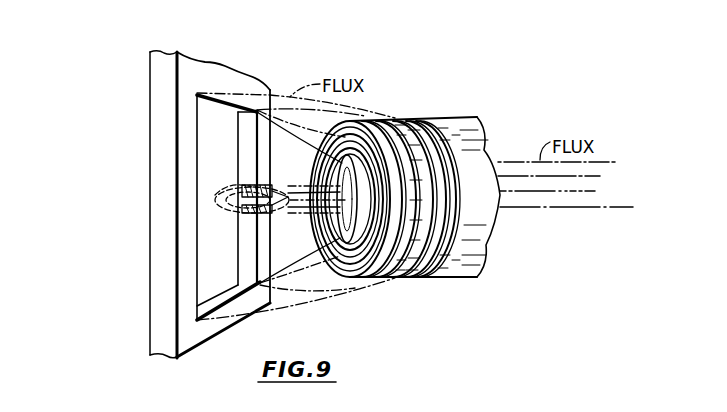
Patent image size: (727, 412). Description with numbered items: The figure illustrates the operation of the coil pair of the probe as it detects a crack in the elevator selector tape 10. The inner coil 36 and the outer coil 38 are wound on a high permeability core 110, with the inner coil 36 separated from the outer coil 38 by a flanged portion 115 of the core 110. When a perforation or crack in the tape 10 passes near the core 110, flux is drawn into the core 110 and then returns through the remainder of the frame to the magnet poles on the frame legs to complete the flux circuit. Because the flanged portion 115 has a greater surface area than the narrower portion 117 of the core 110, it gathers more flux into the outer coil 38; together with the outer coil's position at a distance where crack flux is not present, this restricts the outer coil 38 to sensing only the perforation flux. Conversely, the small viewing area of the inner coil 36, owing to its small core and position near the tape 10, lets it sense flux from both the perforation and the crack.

The elevator selector tape 10 is at (160, 196).
The narrower portion 117 is at (340, 222).
The inner coil 36 is at (388, 272).
The flanged portion 115 is at (422, 273).
The outer coil 38 is at (448, 273).
The high permeability core 110 is at (478, 253).